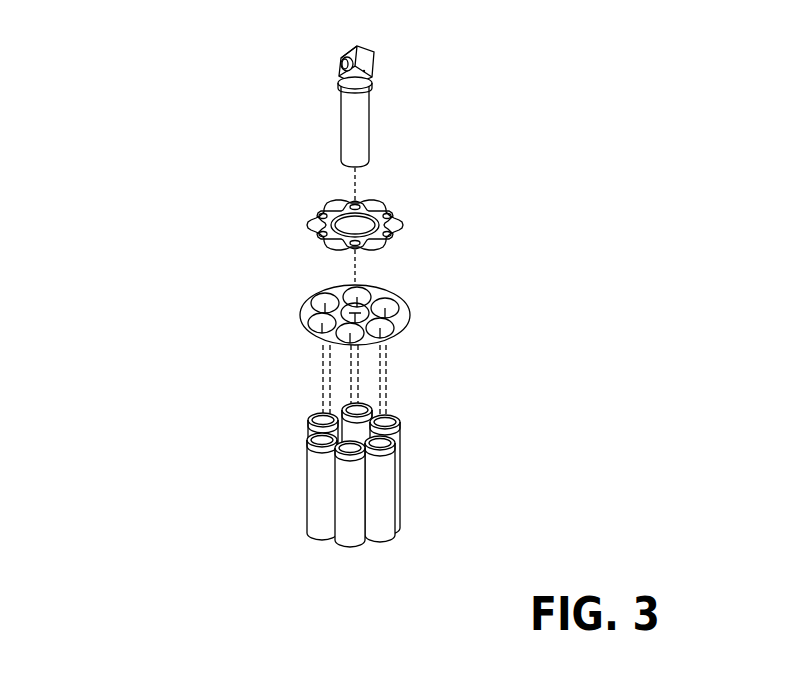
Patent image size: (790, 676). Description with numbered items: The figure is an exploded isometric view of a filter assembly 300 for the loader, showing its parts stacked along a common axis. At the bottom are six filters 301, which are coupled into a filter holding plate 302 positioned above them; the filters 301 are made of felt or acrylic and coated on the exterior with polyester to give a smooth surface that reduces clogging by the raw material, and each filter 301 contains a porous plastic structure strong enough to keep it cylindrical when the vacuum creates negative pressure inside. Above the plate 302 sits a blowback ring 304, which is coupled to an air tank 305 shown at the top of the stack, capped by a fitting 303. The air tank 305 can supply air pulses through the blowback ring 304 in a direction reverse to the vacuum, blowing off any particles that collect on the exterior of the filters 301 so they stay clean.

The vial holder assembly 300 is at (122, 461).
The filters 301 is at (347, 547).
The filter holding plate 302 is at (299, 313).
The cap 303 is at (376, 58).
The blowback ring 304 is at (309, 232).
The air tank 305 is at (371, 114).